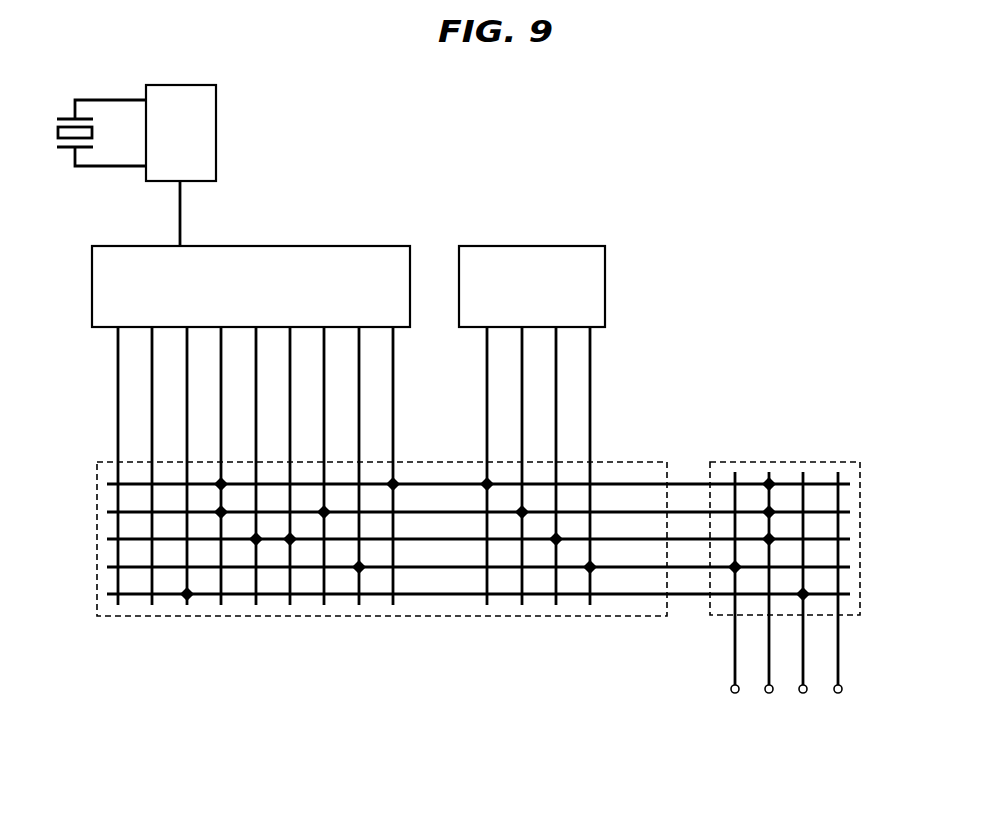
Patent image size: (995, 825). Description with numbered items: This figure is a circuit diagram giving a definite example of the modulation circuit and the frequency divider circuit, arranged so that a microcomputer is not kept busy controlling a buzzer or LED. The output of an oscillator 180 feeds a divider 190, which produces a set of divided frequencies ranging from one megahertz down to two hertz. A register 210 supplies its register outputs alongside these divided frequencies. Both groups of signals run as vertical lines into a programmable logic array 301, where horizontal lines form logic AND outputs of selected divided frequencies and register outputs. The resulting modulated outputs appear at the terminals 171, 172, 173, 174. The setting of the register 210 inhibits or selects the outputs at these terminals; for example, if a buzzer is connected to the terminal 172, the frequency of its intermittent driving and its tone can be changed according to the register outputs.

The oscillator 180 is at (216, 105).
The divider 190 is at (342, 246).
The register 210 is at (478, 246).
The PLA 301 is at (268, 616).
The terminal 171 is at (731, 692).
The terminal 172 is at (766, 693).
The terminal 173 is at (806, 693).
The terminal 174 is at (841, 693).